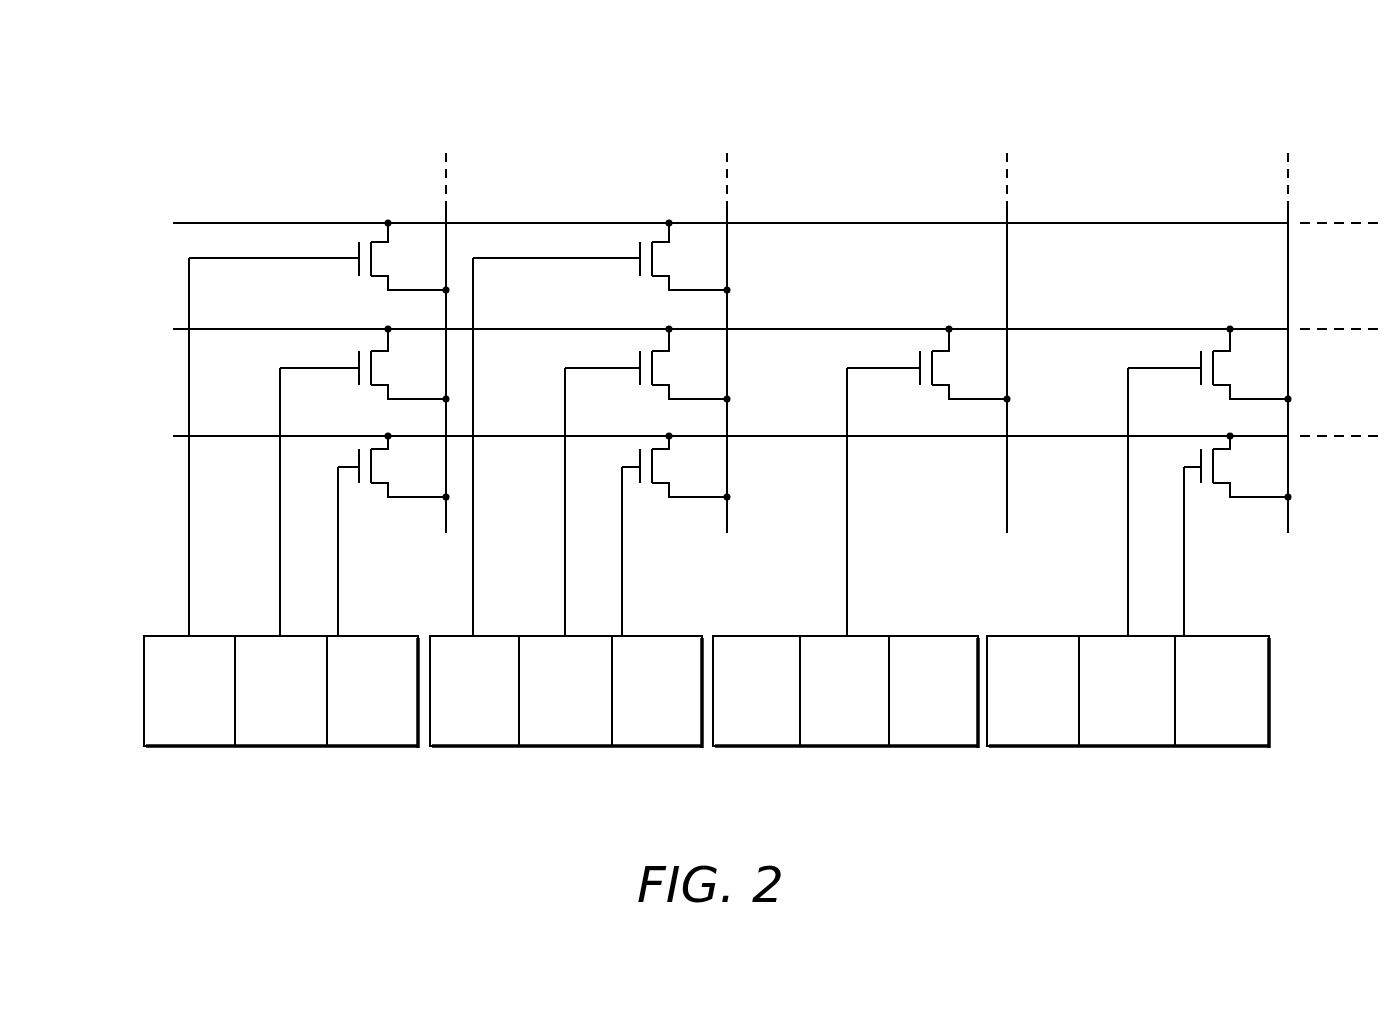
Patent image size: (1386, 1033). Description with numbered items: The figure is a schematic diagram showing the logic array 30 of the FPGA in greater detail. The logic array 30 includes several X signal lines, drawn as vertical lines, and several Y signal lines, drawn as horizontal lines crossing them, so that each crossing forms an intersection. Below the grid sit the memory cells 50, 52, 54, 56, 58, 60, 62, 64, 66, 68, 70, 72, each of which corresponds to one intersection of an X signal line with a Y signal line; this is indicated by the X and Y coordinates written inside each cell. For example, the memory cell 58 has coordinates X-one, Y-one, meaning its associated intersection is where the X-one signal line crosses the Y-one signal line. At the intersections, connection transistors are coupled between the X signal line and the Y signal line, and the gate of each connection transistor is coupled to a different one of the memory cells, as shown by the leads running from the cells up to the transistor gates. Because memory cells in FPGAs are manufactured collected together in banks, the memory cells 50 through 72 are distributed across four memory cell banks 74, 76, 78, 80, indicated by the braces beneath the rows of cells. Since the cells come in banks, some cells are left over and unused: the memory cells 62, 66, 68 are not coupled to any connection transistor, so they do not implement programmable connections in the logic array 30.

The logic array 30 is at (347, 157).
The memory cell 50 is at (189, 691).
The memory cell 52 is at (281, 691).
The memory cell 54 is at (372, 691).
The memory cell 56 is at (474, 691).
The memory cell 58 is at (565, 691).
The memory cell 60 is at (657, 691).
The memory cell 62 is at (756, 691).
The memory cell 64 is at (844, 691).
The memory cell 66 is at (933, 691).
The memory cell 68 is at (1033, 691).
The memory cell 70 is at (1127, 691).
The memory cell 72 is at (1222, 691).
The memory cell bank 74 is at (148, 762).
The memory cell bank 76 is at (435, 762).
The memory cell bank 78 is at (715, 762).
The memory cell bank 80 is at (992, 762).